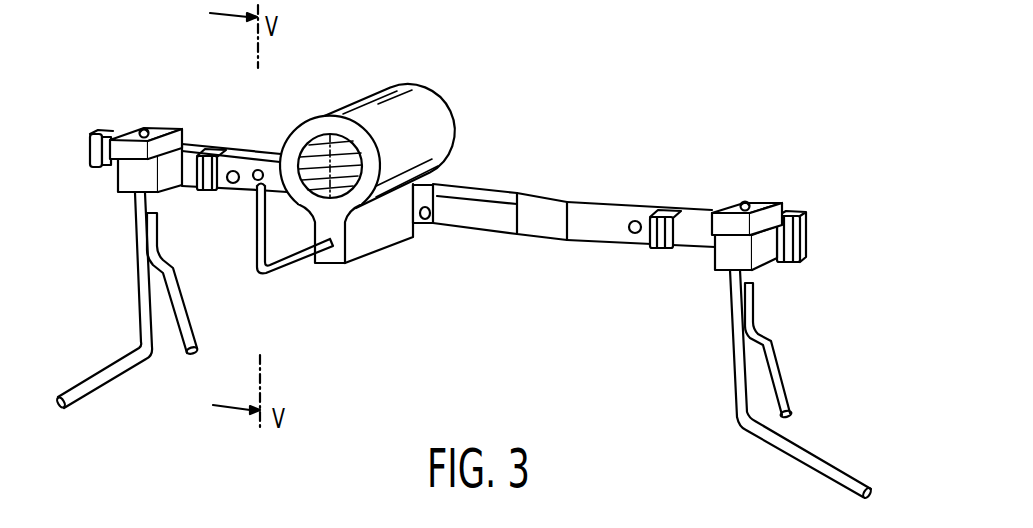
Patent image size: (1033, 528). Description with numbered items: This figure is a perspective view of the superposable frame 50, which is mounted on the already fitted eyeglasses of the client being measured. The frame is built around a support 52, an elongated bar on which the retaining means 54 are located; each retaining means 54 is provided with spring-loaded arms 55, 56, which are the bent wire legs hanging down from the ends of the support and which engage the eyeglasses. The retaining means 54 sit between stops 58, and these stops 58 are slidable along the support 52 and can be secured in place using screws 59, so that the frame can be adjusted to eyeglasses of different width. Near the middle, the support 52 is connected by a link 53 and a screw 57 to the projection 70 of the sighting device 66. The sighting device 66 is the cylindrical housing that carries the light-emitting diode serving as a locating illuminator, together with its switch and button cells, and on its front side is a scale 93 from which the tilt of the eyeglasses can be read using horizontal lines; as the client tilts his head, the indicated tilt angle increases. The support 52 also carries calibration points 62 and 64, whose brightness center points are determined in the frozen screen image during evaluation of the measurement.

The superposable frame 50 is at (573, 249).
The support 52 is at (512, 193).
The link 53 is at (430, 222).
The retaining means 54 is at (135, 177).
The spring-loaded arm 55 is at (133, 308).
The spring-loaded arm 56 is at (196, 314).
The screw 57 is at (412, 212).
The stop 58 is at (101, 138).
The screw 59 is at (138, 124).
The calibration point 62 is at (636, 235).
The calibration point 64 is at (233, 185).
The sighting device 66 is at (456, 88).
The projection 70 is at (360, 249).
The scale 93 is at (311, 146).